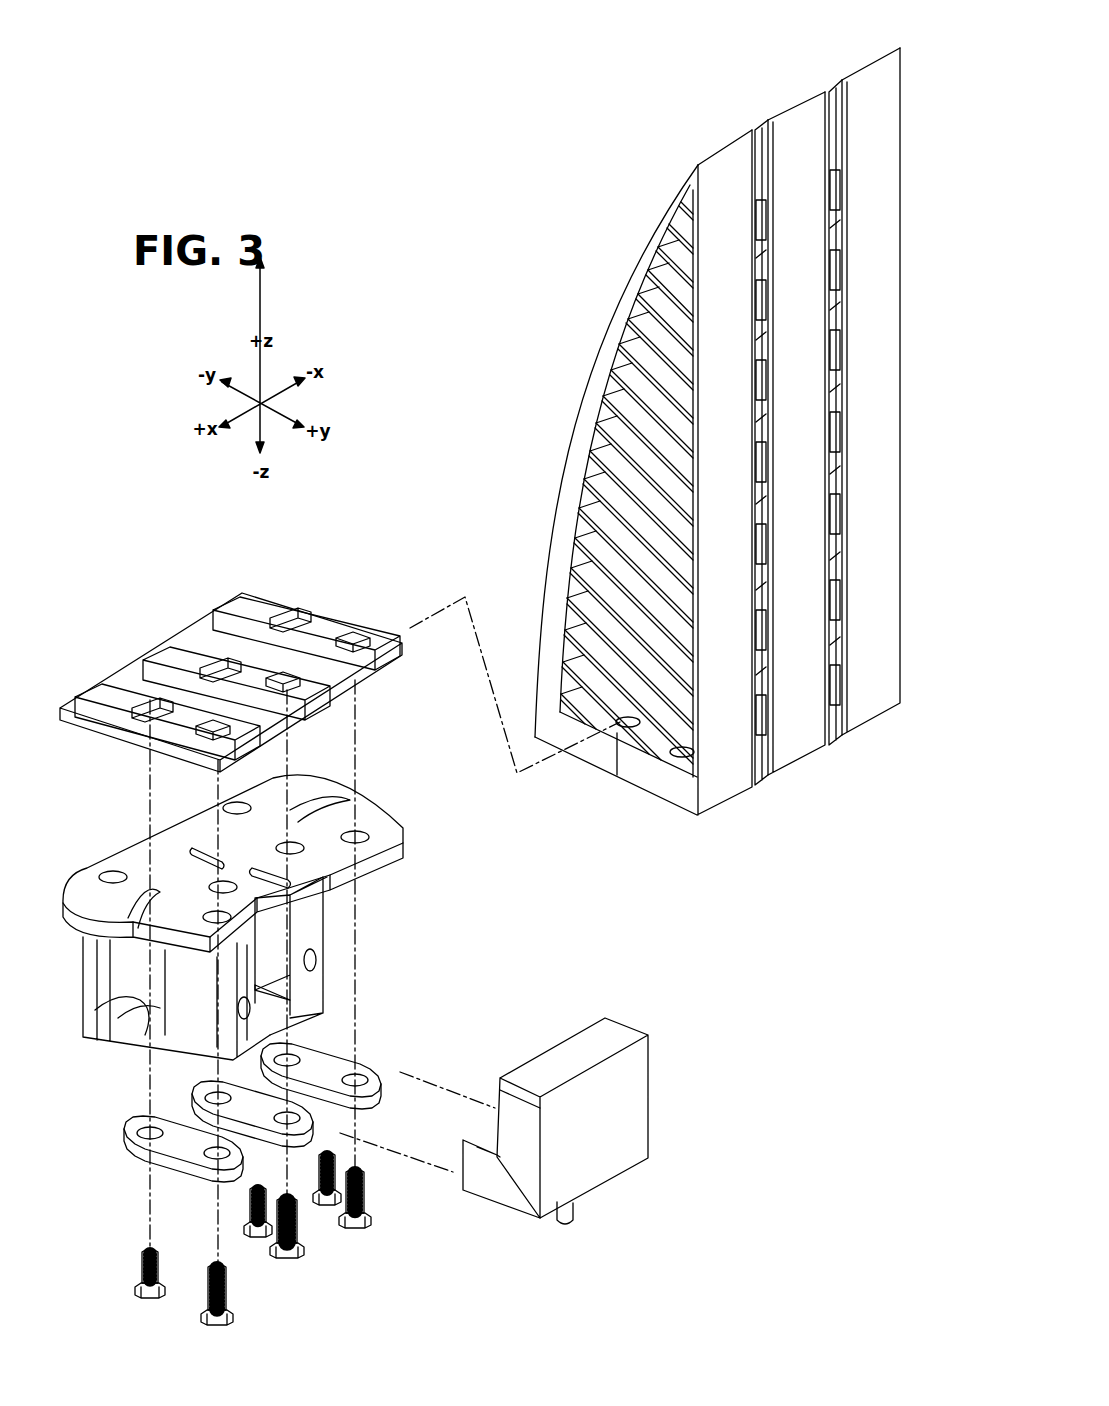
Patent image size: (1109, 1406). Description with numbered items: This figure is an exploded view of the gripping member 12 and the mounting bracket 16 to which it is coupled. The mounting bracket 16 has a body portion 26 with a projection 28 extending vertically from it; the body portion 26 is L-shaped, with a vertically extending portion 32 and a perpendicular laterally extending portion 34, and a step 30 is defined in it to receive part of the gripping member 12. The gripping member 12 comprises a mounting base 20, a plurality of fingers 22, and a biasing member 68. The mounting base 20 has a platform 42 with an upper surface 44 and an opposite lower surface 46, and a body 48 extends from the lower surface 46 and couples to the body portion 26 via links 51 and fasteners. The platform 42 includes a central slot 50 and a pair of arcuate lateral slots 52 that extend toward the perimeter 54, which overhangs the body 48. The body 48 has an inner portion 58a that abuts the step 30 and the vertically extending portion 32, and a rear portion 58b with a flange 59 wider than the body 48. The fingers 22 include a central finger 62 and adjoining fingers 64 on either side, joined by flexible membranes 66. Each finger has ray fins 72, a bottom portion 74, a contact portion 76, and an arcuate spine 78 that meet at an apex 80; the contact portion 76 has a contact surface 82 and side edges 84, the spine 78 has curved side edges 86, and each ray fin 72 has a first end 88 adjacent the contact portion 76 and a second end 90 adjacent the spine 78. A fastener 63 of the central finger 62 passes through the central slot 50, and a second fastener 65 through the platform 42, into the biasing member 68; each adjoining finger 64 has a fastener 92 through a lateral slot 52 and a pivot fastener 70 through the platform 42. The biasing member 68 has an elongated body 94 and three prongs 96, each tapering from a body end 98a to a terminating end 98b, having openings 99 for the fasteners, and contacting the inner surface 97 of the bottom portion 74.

The gripping member 12 is at (462, 270).
The mounting bracket 16 is at (572, 1132).
The mounting base 20 is at (220, 927).
The plurality of fingers 22 is at (712, 432).
The body portion 26 is at (605, 1185).
The projection 28 is at (573, 1220).
The step 30 is at (490, 1145).
The vertically extending portion 32 is at (505, 1072).
The laterally extending portion 34 is at (475, 1185).
The platform 42 is at (220, 927).
The upper surface 44 is at (135, 858).
The lower surface 46 is at (65, 935).
The body 48 is at (168, 1060).
The central slot 50 is at (335, 878).
The links 51 is at (368, 1042).
The lateral slots 52 is at (340, 800).
The perimeter 54 is at (140, 1025).
The inner portion 58a is at (320, 940).
The rear portion 58b is at (80, 960).
The flange 59 is at (88, 1020).
The central finger 62 is at (829, 432).
The fastener 63 is at (303, 1255).
The adjoining fingers 64 is at (748, 124).
The second fastener 65 is at (256, 1238).
The flexible membranes 66 is at (828, 350).
The biasing member 68 is at (246, 645).
The fastener 70 is at (200, 1318).
The ray fins 72 is at (608, 486).
The bottom portion 74 is at (668, 790).
The contact portion 76 is at (730, 785).
The spine 78 is at (596, 345).
The apex 80 is at (730, 148).
The contact surface 82 is at (709, 460).
The side edges 84 is at (690, 290).
The side edges 86 is at (630, 278).
The first end 88 is at (693, 640).
The second end 90 is at (562, 580).
The fastener 92 is at (133, 1292).
The elongated body 94 is at (372, 680).
The prongs 96 is at (222, 603).
The inner surface 97 is at (655, 740).
The body end 98a is at (400, 650).
The terminating end 98b is at (208, 620).
The openings 99 is at (215, 678).